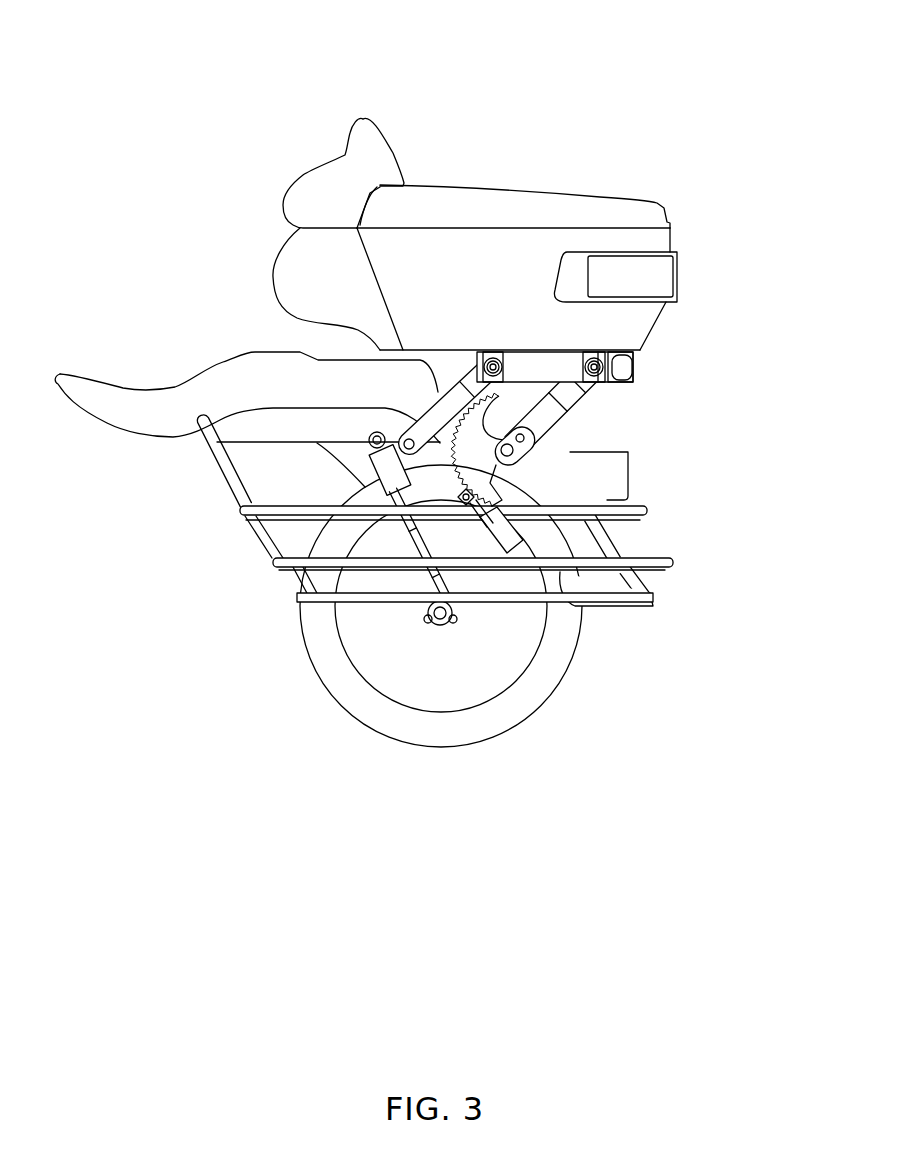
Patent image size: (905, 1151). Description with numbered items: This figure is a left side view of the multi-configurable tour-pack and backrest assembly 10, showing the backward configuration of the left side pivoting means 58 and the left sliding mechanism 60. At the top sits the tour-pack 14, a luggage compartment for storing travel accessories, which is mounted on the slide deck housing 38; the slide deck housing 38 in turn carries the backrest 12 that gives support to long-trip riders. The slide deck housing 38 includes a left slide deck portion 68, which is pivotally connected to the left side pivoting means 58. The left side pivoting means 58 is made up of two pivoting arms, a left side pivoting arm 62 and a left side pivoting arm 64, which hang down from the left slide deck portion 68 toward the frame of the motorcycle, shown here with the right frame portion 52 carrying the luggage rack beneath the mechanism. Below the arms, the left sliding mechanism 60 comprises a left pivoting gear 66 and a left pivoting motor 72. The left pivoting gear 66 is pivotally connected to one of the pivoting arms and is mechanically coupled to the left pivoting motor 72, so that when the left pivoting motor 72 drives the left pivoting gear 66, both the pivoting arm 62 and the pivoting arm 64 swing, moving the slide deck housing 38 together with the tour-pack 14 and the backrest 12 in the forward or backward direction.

The multi-configurable tour-pack and backrest assembly 10 is at (508, 69).
The backrest 12 is at (303, 198).
The tour-pack 14 is at (596, 208).
The slide deck housing 38 is at (650, 362).
The right frame portion 52 is at (196, 469).
The left side pivoting means 58 is at (430, 473).
The left sliding mechanism 60 is at (581, 433).
The left side pivoting arm 62 is at (458, 392).
The left side pivoting arm 64 is at (552, 410).
The left pivoting gear 66 is at (482, 475).
The left slide deck portion 68 is at (552, 358).
The left pivoting motor 72 is at (508, 538).